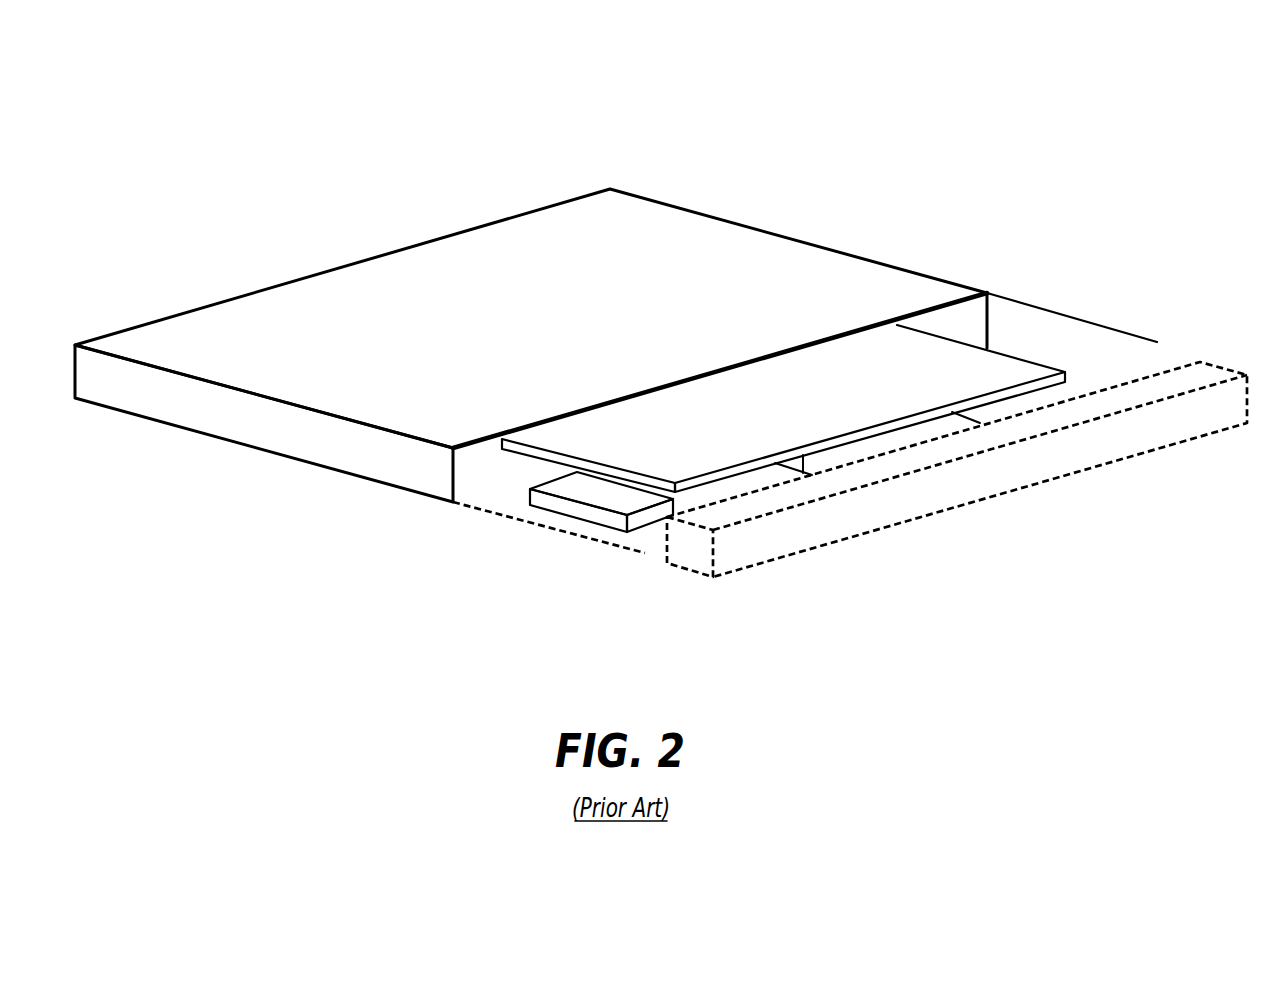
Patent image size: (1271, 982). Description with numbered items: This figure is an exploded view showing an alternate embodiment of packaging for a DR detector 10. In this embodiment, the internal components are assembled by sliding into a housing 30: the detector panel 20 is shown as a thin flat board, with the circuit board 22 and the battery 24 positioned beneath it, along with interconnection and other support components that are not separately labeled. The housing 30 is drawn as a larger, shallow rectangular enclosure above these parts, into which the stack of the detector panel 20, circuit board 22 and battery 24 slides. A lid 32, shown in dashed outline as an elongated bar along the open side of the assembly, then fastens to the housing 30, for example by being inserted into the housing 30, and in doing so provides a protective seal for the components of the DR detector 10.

The DR detector 10 is at (783, 77).
The detector panel 20 is at (738, 413).
The circuit board 22 is at (933, 440).
The battery 24 is at (567, 520).
The housing 30 is at (432, 270).
The lid 32 is at (1022, 485).